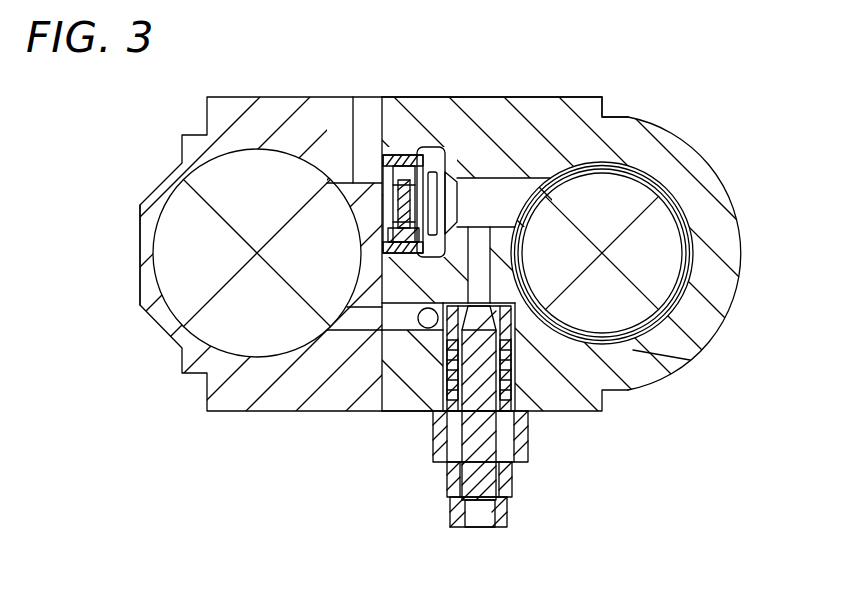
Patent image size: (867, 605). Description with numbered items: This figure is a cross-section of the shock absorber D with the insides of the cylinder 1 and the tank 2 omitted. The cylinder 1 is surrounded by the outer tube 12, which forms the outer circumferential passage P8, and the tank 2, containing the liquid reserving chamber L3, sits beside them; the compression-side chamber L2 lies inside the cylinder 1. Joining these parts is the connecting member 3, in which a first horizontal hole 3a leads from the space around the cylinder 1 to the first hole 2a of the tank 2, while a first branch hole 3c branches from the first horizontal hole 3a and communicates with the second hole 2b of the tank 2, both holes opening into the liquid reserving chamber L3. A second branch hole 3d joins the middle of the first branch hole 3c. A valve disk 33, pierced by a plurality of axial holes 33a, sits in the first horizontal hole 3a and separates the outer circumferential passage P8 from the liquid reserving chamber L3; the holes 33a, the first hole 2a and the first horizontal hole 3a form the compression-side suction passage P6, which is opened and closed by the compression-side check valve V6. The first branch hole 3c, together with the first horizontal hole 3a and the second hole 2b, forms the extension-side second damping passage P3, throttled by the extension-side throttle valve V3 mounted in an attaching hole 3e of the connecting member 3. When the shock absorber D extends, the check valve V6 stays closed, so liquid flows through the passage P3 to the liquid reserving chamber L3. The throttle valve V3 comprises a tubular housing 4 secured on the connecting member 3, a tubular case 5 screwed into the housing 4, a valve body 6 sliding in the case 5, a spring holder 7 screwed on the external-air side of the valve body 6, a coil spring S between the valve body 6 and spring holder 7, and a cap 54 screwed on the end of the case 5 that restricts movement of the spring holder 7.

The cylinder 1 is at (735, 266).
The tank 2 is at (219, 92).
The first hole 2a is at (355, 100).
The second hole 2b is at (352, 330).
The connecting member 3 is at (664, 125).
The first horizontal hole 3a is at (515, 110).
The first branch hole 3c is at (528, 288).
The second branch hole 3d is at (402, 406).
The attaching hole 3e is at (530, 396).
The tubular housing 4 is at (440, 445).
The tubular case 5 is at (447, 492).
The valve body 6 is at (430, 335).
The spring holder 7 is at (505, 480).
The outer tube 12 is at (704, 196).
The valve disk 33 is at (397, 154).
The holes 33a is at (383, 236).
The cap 54 is at (453, 528).
The shock absorber D is at (150, 148).
The compression-side chamber L2 is at (690, 358).
The liquid reserving chamber L3 is at (188, 292).
The extension-side second damping passage P3 is at (494, 244).
The compression-side suction passage P6 is at (412, 145).
The outer circumferential passage P8 is at (607, 160).
The coil spring S is at (518, 440).
The extension-side throttle valve V3 is at (500, 536).
The compression-side check valve V6 is at (440, 150).